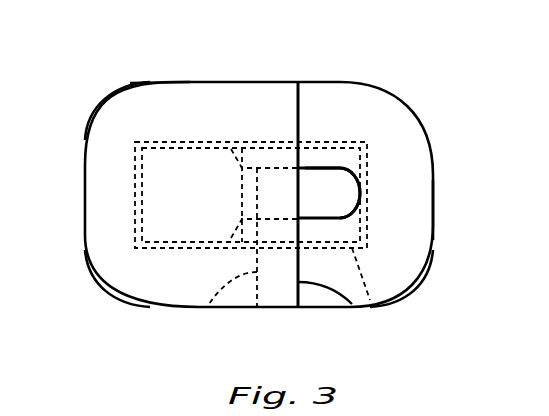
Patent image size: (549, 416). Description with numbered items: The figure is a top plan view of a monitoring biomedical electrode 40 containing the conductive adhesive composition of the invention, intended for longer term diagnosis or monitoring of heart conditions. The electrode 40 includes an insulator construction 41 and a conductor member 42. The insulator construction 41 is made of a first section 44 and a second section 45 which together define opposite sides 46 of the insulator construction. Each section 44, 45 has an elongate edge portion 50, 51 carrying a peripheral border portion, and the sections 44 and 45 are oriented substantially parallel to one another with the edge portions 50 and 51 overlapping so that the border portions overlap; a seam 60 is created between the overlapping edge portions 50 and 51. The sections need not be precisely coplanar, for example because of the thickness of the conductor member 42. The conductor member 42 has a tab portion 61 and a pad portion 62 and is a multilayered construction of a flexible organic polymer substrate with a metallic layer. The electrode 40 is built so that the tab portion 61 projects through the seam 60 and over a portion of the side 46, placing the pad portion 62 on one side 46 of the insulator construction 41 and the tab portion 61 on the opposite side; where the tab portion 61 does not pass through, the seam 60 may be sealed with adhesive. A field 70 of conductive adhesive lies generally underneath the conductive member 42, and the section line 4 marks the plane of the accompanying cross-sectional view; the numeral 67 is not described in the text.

The section line 4- 4 is at (113, 197).
The electrode 40 is at (372, 82).
The insulator construction 41 is at (158, 97).
The conductor member 42 is at (366, 190).
The first section 44 is at (117, 115).
The second section 45 is at (408, 231).
The side 46 is at (407, 275).
The elongate edge portion 50 is at (350, 303).
The elongate edge portion 51 is at (207, 307).
The seam 60 is at (274, 100).
The tab portion 61 is at (343, 180).
The pad portion 62 is at (202, 157).
The latch arm 67 is at (324, 182).
The field of conductive adhesive 70 is at (370, 300).